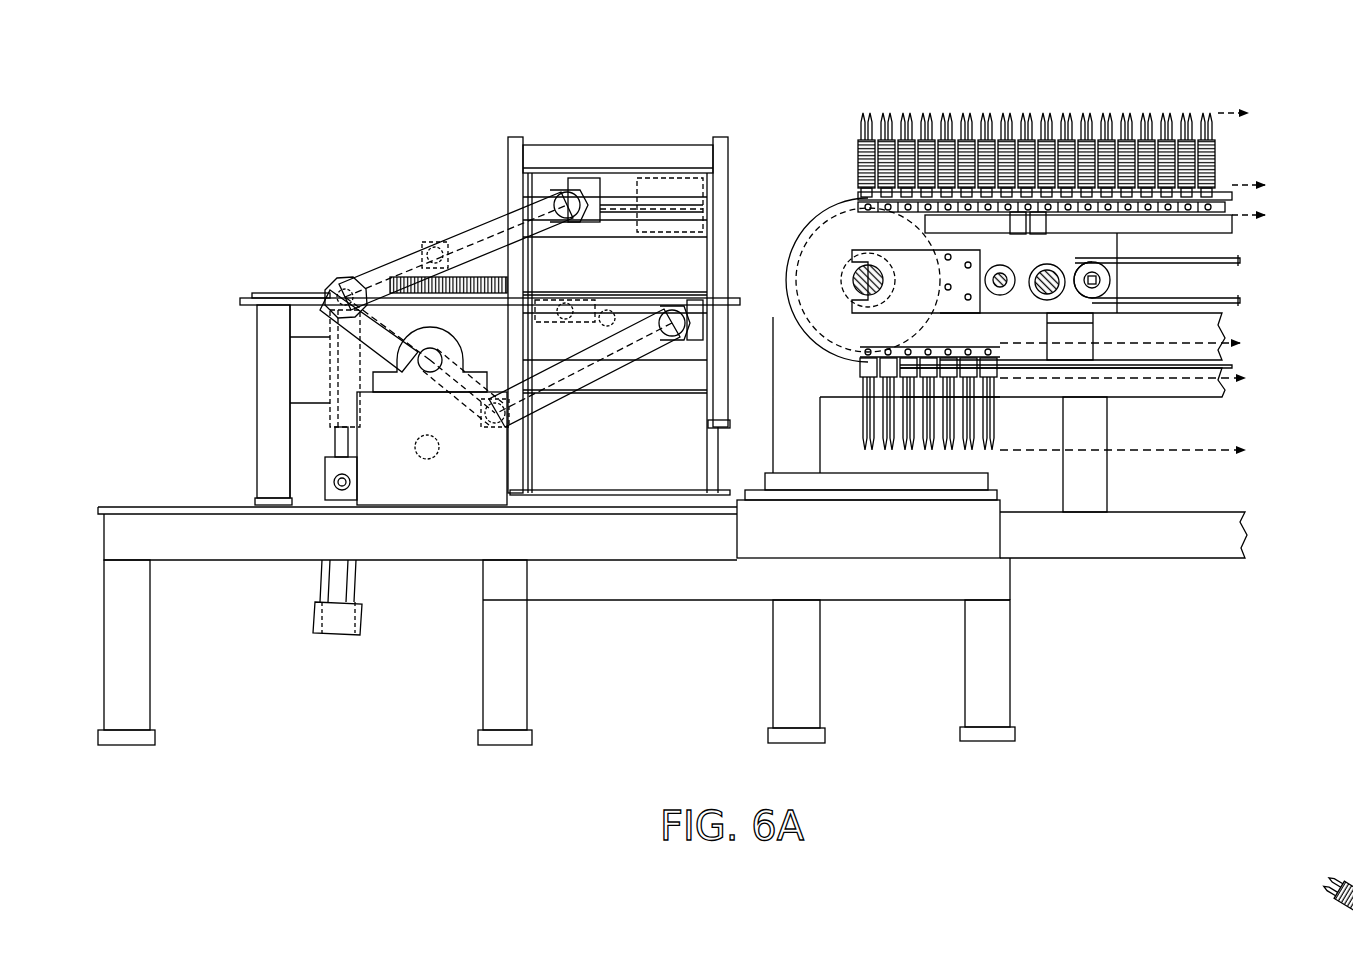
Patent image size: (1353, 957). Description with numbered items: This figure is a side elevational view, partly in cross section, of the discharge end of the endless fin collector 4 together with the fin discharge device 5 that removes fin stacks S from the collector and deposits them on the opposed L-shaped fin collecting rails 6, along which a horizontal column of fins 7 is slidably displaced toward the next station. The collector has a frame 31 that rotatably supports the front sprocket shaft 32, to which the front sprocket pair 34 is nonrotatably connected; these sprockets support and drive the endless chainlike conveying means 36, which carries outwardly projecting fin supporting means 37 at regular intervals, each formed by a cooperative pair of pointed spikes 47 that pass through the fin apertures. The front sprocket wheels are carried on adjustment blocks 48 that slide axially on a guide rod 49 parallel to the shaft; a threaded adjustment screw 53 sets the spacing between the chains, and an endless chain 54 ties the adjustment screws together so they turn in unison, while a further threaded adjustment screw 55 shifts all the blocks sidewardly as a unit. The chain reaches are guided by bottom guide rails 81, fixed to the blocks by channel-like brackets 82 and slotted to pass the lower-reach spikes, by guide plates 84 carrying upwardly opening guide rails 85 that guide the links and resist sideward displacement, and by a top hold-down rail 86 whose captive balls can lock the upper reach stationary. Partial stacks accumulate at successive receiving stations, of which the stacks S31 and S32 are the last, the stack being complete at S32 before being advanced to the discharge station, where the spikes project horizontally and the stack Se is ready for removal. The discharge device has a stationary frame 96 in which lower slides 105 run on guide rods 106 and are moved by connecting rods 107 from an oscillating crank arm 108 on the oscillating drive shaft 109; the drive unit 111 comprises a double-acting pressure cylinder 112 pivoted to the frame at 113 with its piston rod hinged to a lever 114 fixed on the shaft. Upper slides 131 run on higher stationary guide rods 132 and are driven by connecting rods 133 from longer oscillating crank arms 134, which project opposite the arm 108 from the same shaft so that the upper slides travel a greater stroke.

The endless fin collector 4 is at (1252, 148).
The fin discharge device 5 is at (432, 135).
The fin collecting rails 6 is at (300, 295).
The column of fins 7 is at (473, 280).
The frame 31 is at (1115, 548).
The front sprocket shaft 32 is at (882, 276).
The front sprocket pair 34 is at (912, 328).
The endless chainlike conveying means 36 is at (1147, 222).
The fin supporting means 37 is at (833, 120).
The spike 47 is at (825, 425).
The adjustment block 48 is at (1027, 305).
The guide rod 49 is at (1049, 266).
The threaded adjustment screw 53 is at (1102, 280).
The endless chain 54 is at (1240, 300).
The threaded adjustment screw 55 is at (1003, 266).
The bottom guide rail 81 is at (1180, 368).
The channel-like bracket 82 is at (1085, 333).
The guide plate 84 is at (1234, 226).
The guide rail 85 is at (1232, 208).
The top hold-down rail 86 is at (1234, 197).
The stationary frame 96 is at (592, 145).
The slide 105 is at (608, 312).
The guide rod 106 is at (545, 322).
The connecting rod 107 is at (553, 393).
The oscillating crank arm 108 is at (466, 413).
The oscillating drive shaft 109 is at (430, 365).
The drive unit 111 is at (322, 588).
The double-acting pressure cylinder 112 is at (356, 583).
The pivot 113 is at (357, 483).
The lever 114 is at (365, 385).
The upper slide 131 is at (612, 148).
The stationary guide rod 132 is at (650, 215).
The connecting rod 133 is at (395, 268).
The oscillating crank arm 134 is at (358, 280).
The fin stack S is at (805, 150).
The discharge station fin stack Se is at (728, 285).
The fin stack at station thirty-one S31 is at (1050, 125).
The fin stack at station thirty-two S32 is at (985, 130).